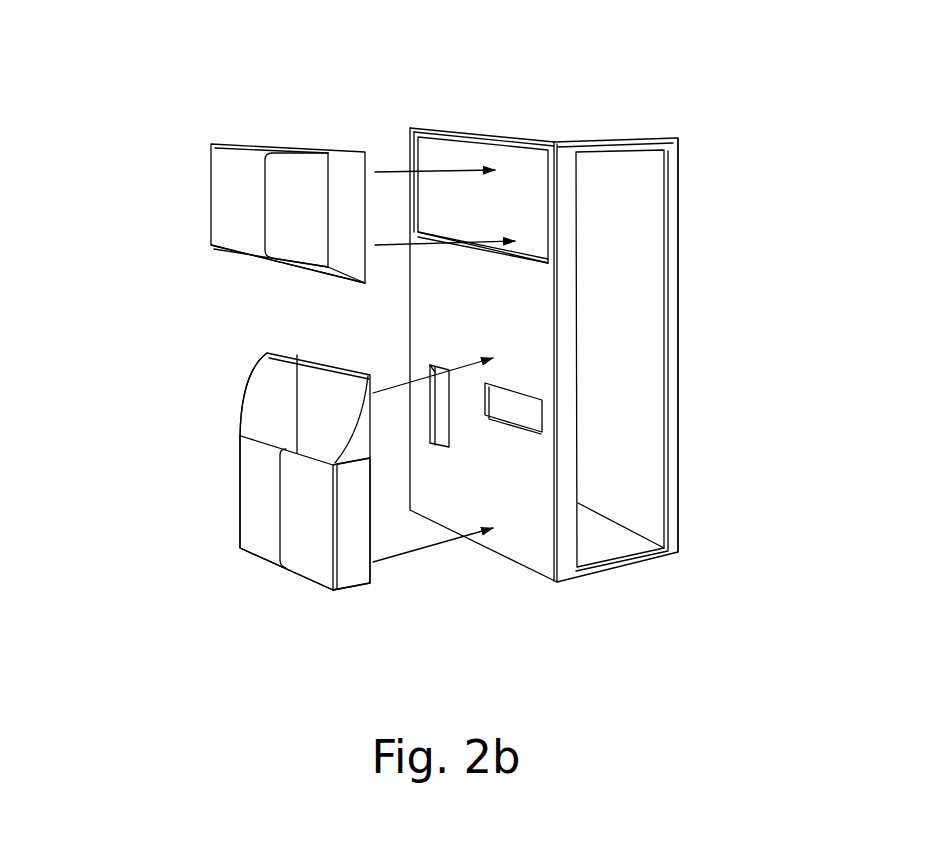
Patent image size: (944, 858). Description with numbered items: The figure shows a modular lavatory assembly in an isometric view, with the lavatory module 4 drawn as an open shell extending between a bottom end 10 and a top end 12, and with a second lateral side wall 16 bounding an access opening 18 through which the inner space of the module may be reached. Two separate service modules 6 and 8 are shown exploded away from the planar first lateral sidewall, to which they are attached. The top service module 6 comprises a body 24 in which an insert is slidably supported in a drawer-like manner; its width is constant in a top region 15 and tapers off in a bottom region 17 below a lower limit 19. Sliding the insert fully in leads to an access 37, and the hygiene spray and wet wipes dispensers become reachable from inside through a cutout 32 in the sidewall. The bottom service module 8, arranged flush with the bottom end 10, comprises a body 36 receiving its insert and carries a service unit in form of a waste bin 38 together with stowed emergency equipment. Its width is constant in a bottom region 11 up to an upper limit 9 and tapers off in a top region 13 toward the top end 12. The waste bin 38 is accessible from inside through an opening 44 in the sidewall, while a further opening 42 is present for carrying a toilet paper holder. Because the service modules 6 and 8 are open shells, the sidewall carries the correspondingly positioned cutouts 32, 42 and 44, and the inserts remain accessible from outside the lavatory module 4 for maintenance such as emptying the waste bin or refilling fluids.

The lavatory module 4 is at (668, 275).
The service module 6 is at (290, 128).
The service module 8 is at (230, 445).
The upper limit 9 is at (230, 482).
The bottom end 10 is at (625, 546).
The bottom region 11 is at (282, 507).
The top end 12 is at (570, 135).
The top region 13 is at (297, 409).
The top region 15 is at (265, 200).
The second lateral side wall 16 is at (690, 172).
The bottom region 17 is at (218, 268).
The access opening 18 is at (632, 170).
The lower limit 19 is at (200, 240).
The body 24 is at (210, 183).
The cutout 32 is at (528, 240).
The body 36 is at (260, 428).
The access 37 is at (530, 135).
The waste bin 38 is at (353, 570).
The opening 42 is at (443, 436).
The opening 44 is at (530, 408).